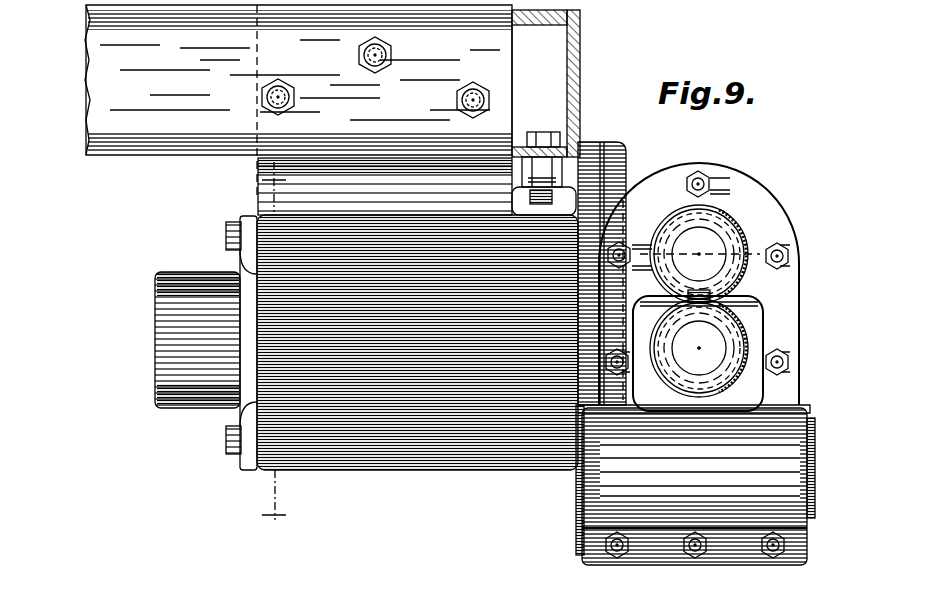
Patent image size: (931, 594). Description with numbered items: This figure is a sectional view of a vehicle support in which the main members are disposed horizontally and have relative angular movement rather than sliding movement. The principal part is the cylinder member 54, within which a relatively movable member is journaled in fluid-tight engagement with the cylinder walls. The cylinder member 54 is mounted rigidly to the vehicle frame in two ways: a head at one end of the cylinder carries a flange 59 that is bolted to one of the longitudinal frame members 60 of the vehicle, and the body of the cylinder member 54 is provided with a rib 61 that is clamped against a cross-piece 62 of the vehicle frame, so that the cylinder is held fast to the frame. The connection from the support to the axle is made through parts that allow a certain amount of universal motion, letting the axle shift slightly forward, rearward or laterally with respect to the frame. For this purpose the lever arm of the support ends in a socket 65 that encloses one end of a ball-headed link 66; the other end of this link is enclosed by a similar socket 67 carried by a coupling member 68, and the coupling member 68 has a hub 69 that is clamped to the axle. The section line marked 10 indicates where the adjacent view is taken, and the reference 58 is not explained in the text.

The section line 10- 10 is at (275, 350).
The cylinder member 54 is at (396, 450).
The supporting column 58 is at (591, 150).
The flange 59 is at (522, 170).
The longitudinal frame member 60 is at (580, 62).
The rib 61 is at (262, 190).
The cross-piece 62 is at (155, 126).
The socket 65 is at (742, 330).
The ball-headed link 66 is at (756, 300).
The socket 67 is at (730, 240).
The coupling member 68 is at (782, 344).
The hub 69 is at (790, 462).